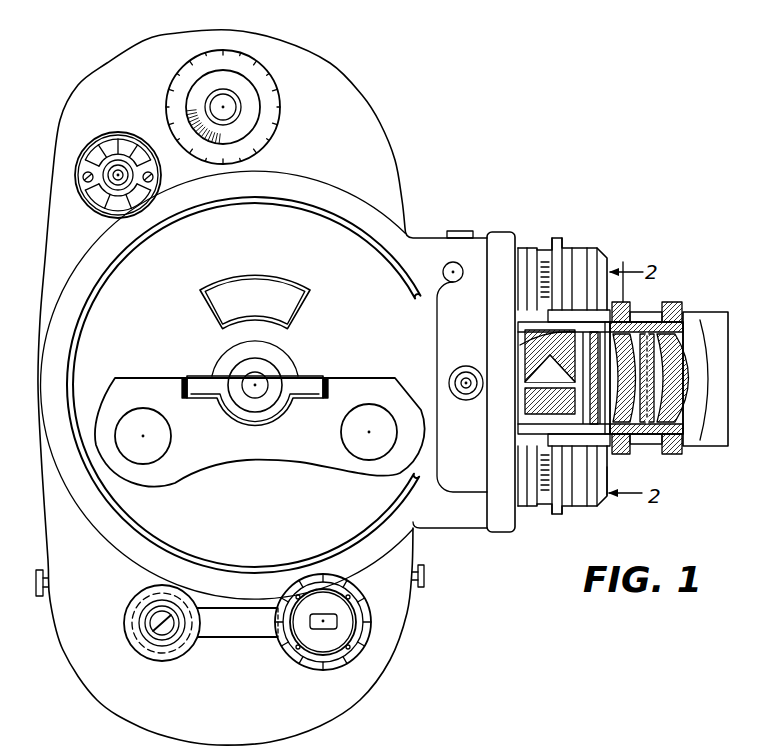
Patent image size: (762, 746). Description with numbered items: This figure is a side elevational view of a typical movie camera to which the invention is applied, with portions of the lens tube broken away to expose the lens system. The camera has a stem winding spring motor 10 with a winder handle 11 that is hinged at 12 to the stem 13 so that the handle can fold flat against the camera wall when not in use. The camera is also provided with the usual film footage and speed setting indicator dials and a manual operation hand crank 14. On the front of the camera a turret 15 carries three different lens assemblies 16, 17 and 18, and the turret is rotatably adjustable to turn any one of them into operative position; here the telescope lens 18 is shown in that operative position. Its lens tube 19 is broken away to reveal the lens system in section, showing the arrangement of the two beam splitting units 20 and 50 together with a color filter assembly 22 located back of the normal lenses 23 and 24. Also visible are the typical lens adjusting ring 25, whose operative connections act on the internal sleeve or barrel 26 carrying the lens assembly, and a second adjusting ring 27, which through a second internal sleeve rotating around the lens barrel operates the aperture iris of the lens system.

The stem winding spring motor 10 is at (93, 319).
The winder handle 11 is at (243, 463).
The hinge 12 is at (186, 376).
The stem 13 is at (260, 382).
The manual operation hand crank 14 is at (232, 636).
The turret 15 is at (505, 533).
The lens assembly 16 is at (559, 516).
The lens assembly 17 is at (603, 243).
The telescope lens 18 is at (694, 300).
The lens tube 19 is at (708, 316).
The beam splitting unit 20 is at (530, 398).
The color filter assembly 22 is at (597, 410).
The normal lens 23 is at (686, 366).
The normal lens 24 is at (654, 322).
The lens adjusting ring 25 is at (628, 324).
The internal sleeve or barrel 26 is at (700, 420).
The second adjusting ring 27 is at (674, 452).
The beam splitting unit 50 is at (522, 333).